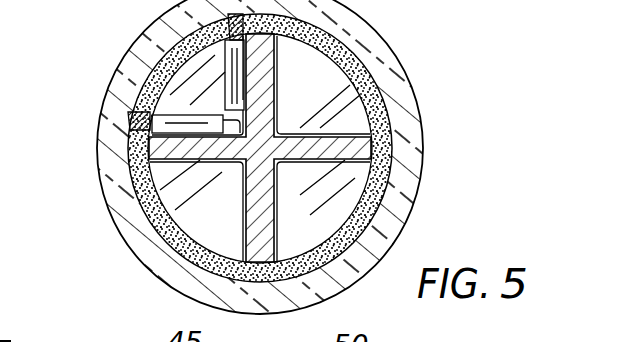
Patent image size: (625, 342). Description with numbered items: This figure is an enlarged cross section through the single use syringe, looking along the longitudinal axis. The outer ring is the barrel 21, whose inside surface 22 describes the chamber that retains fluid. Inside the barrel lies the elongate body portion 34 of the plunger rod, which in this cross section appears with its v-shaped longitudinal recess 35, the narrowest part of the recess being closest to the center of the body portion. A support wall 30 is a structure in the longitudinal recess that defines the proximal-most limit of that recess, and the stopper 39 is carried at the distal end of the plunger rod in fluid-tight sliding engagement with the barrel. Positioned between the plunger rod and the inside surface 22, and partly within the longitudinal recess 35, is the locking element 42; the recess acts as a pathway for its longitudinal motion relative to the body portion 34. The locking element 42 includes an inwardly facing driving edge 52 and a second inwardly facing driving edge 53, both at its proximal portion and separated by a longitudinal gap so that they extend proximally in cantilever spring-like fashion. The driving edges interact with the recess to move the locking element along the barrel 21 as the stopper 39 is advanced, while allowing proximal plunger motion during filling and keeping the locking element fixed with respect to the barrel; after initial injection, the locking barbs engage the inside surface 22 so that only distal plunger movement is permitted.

The barrel 21 is at (414, 99).
The inside surface 22 is at (359, 68).
The support wall 30 is at (190, 207).
The elongate body portion 34 is at (351, 163).
The longitudinal recess 35 is at (188, 73).
The stopper 39 is at (384, 148).
The locking element 42 is at (143, 112).
The driving edge 52 is at (150, 128).
The second driving edge 53 is at (246, 76).